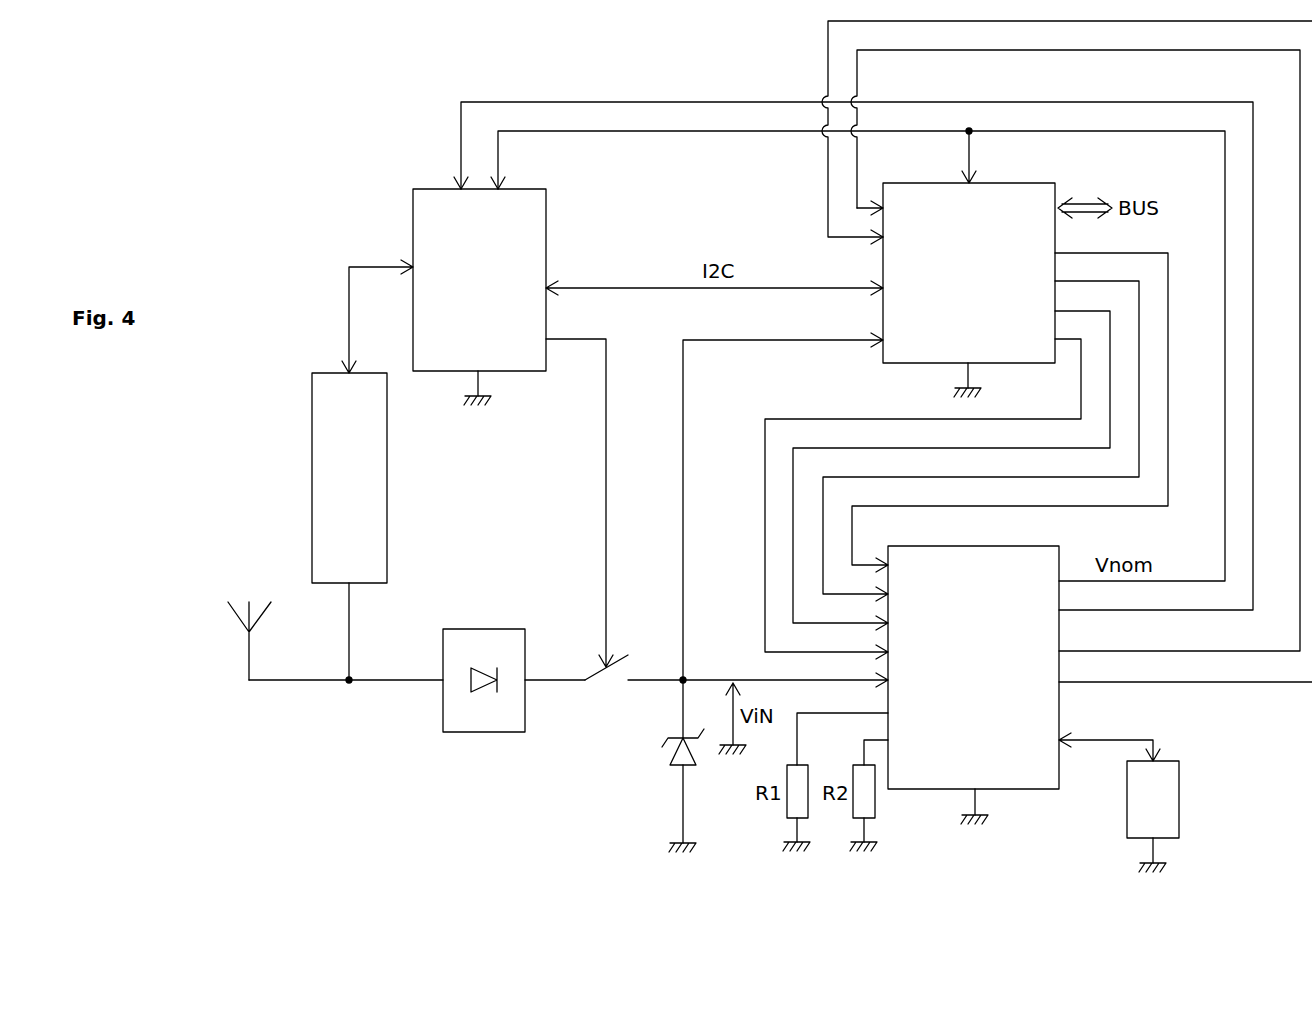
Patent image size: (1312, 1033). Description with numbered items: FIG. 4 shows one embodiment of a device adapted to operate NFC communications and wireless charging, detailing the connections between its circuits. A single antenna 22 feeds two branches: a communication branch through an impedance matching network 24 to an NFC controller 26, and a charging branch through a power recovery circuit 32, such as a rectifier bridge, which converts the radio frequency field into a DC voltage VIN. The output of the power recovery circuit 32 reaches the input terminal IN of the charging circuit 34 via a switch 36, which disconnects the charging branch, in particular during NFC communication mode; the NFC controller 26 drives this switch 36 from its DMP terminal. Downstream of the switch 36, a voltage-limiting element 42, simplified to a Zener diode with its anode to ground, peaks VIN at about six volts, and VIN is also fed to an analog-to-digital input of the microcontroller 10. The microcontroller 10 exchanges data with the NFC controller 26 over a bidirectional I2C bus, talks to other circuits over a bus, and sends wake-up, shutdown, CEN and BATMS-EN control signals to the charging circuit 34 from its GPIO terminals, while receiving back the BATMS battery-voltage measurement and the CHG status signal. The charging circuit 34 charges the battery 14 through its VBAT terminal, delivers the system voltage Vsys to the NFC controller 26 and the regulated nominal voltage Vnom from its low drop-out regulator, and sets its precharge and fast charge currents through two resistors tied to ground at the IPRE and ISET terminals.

The microcontroller 10 is at (1008, 183).
The NFC controller 26 is at (546, 258).
The impedance matching network 24 is at (387, 530).
The antenna 22 is at (249, 660).
The power recovery circuit 32 is at (472, 629).
The switch 36 is at (600, 678).
The voltage-limiting element 42 is at (672, 757).
The charging circuit 34 is at (973, 546).
The battery 14 is at (1179, 806).